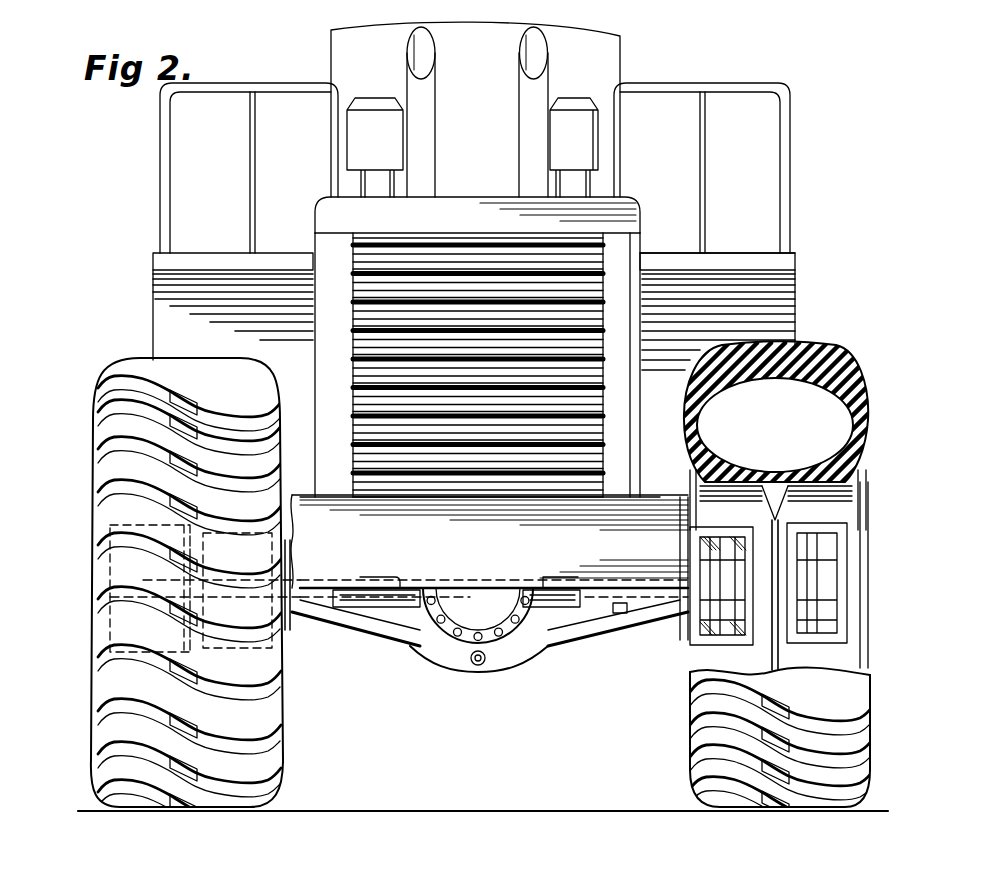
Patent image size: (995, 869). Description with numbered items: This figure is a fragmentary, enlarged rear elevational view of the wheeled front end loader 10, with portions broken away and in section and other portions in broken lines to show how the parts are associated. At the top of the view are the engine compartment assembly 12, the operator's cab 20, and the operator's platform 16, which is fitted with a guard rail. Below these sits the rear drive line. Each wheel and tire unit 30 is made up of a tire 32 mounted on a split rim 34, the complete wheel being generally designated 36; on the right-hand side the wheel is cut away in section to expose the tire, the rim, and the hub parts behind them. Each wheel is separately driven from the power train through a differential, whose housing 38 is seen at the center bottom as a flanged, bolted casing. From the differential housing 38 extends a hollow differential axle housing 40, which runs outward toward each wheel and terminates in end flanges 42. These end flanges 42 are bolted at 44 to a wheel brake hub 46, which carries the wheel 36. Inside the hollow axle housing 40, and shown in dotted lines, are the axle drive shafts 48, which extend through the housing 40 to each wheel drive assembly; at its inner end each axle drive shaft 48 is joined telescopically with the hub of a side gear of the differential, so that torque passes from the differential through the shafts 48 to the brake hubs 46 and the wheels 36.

The wheeled front end loader 10 is at (670, 70).
The engine compartment assembly 12 is at (626, 200).
The operator's platform 16 is at (735, 253).
The operator's cab 20 is at (629, 58).
The wheel and tire unit 30 is at (543, 575).
The tire 32 is at (801, 345).
The split rim 34 is at (862, 466).
The wheel 36 is at (883, 407).
The differential housing 38 is at (462, 612).
The differential axle housing 40 is at (590, 630).
The end flange 42 is at (683, 617).
The bolts 44 is at (680, 504).
The wheel brake hub 46 is at (730, 481).
The axle drive shaft 48 is at (360, 580).